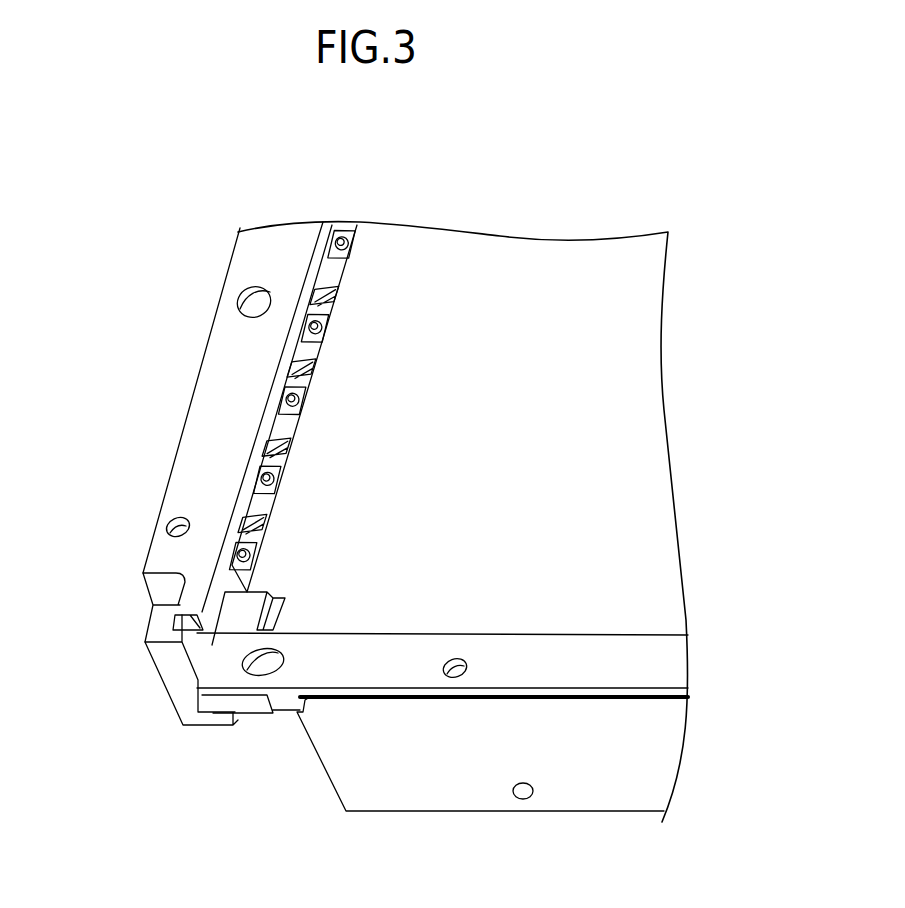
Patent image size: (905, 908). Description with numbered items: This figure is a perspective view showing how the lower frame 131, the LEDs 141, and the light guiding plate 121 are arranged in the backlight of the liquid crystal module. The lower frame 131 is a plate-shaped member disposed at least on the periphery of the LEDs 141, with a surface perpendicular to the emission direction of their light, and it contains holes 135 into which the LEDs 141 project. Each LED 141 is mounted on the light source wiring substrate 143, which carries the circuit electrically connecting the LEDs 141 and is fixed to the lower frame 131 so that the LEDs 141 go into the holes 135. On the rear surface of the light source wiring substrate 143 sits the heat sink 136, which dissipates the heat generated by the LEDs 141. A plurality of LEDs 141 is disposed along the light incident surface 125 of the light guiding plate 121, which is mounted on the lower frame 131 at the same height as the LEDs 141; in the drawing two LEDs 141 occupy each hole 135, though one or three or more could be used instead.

The light guiding plate 121 is at (503, 259).
The light incident surface 125 is at (343, 232).
The lower frame 131 is at (276, 242).
The hole 135 is at (300, 355).
The heat sink 136 is at (174, 670).
The LED 141 is at (263, 464).
The light source wiring substrate 143 is at (255, 518).